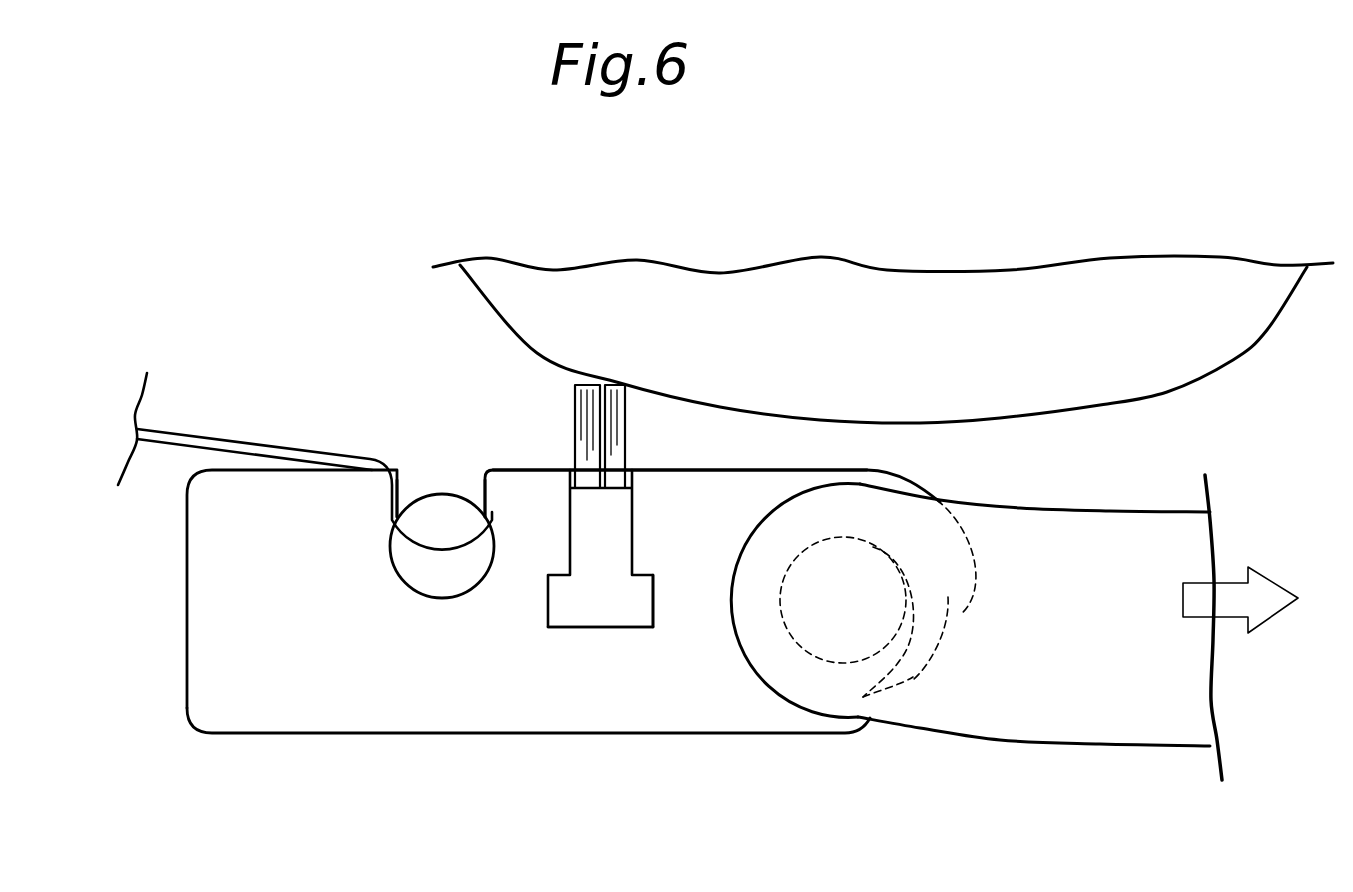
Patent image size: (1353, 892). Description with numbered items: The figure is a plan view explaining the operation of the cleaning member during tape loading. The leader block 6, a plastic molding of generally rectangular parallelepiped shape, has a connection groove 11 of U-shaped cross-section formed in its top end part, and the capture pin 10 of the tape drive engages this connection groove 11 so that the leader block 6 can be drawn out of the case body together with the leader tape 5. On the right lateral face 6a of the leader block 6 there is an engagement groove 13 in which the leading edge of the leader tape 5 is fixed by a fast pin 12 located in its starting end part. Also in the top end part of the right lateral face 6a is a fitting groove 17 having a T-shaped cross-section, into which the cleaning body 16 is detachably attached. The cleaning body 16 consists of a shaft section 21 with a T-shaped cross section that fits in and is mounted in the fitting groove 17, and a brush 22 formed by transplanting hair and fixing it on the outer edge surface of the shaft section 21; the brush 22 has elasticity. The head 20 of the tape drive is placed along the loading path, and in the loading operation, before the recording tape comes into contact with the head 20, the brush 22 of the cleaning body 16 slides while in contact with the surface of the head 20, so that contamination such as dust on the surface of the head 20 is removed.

The leader tape 5 is at (200, 437).
The leader block 6 is at (165, 676).
The right lateral face 6a is at (757, 467).
The capture pin 10 is at (913, 680).
The connection groove 11 is at (905, 630).
The fast pin 12 is at (443, 517).
The engagement groove 13 is at (453, 566).
The cleaning body 16 is at (675, 630).
The fitting groove 17 is at (627, 625).
The head 20 is at (1162, 392).
The shaft section 21 is at (583, 533).
The brush 22 is at (623, 437).